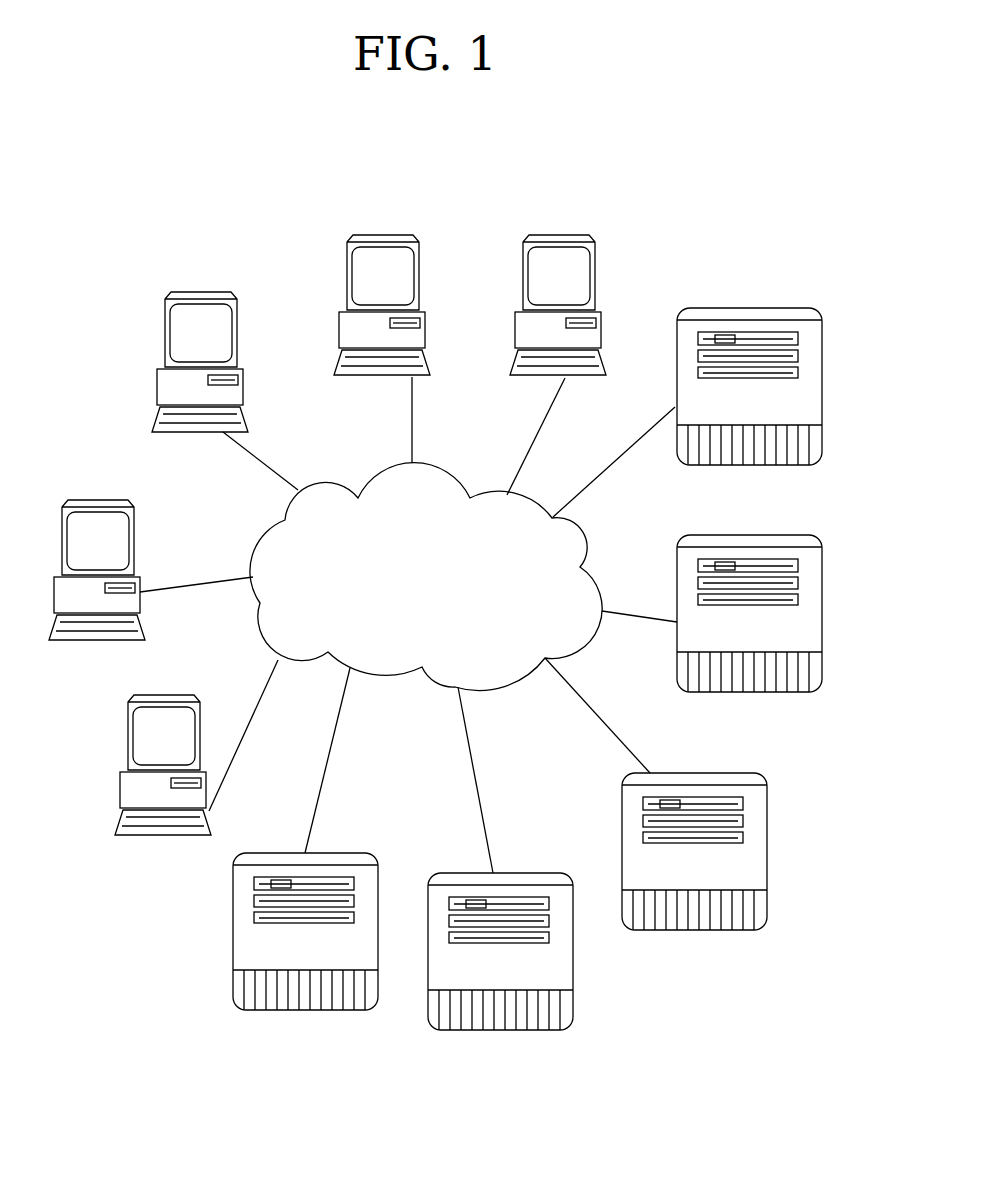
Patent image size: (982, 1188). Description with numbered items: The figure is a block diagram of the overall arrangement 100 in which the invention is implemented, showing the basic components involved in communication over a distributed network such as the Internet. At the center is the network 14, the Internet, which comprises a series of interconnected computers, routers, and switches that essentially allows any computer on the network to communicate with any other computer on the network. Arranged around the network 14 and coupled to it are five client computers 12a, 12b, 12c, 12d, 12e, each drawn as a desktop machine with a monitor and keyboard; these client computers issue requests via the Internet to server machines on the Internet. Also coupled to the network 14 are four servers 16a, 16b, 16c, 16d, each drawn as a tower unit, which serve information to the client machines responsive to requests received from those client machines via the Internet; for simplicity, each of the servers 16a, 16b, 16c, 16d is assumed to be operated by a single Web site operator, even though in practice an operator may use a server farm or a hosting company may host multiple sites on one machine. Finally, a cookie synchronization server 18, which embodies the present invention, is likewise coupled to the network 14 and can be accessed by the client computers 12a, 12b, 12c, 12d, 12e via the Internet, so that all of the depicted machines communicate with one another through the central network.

The network system 100 is at (473, 150).
The client computer 12a is at (418, 250).
The client computer 12b is at (248, 292).
The client computer 12c is at (145, 500).
The client computer 12d is at (212, 692).
The client computer 12e is at (598, 250).
The network 14 is at (590, 557).
The server 16a is at (770, 775).
The server 16b is at (815, 321).
The server 16c is at (815, 550).
The server 16d is at (377, 853).
The cookie synchronization server 18 is at (565, 886).